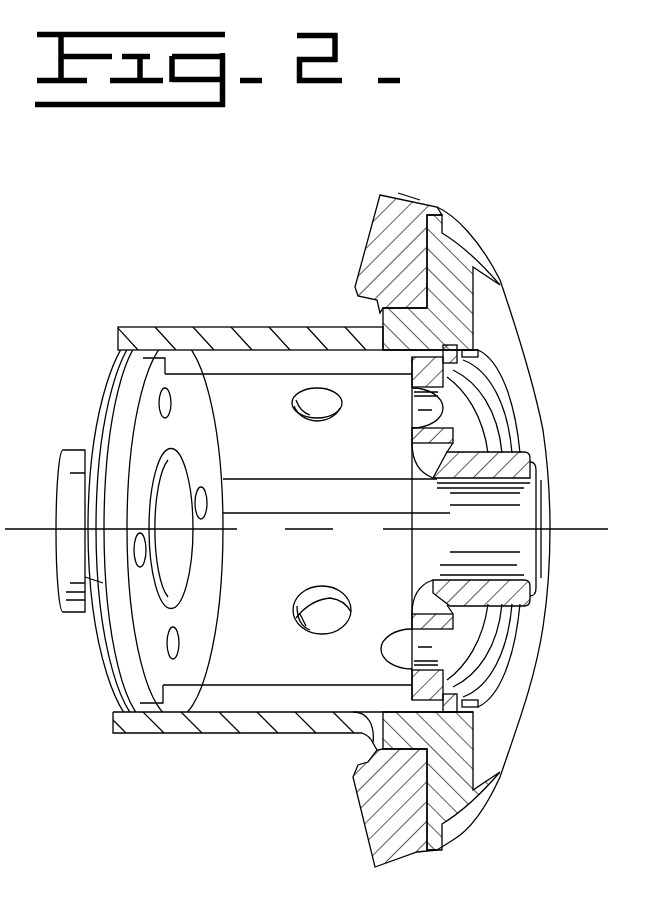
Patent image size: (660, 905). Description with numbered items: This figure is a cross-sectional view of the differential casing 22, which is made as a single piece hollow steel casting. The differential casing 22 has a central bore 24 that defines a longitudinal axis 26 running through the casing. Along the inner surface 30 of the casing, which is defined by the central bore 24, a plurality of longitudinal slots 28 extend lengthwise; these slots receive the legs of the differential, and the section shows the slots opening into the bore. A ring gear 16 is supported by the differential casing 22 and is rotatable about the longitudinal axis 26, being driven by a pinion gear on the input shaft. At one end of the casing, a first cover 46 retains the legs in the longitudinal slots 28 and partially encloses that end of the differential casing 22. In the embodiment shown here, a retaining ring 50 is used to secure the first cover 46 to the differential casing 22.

The ring gear 16 is at (372, 808).
The differential casing 22 is at (297, 725).
The central bore 24 is at (300, 350).
The longitudinal axis 26 is at (568, 528).
The longitudinal slots 28 is at (348, 368).
The inner surface 30 is at (260, 414).
The first cover 46 is at (457, 647).
The retaining ring 50 is at (480, 387).